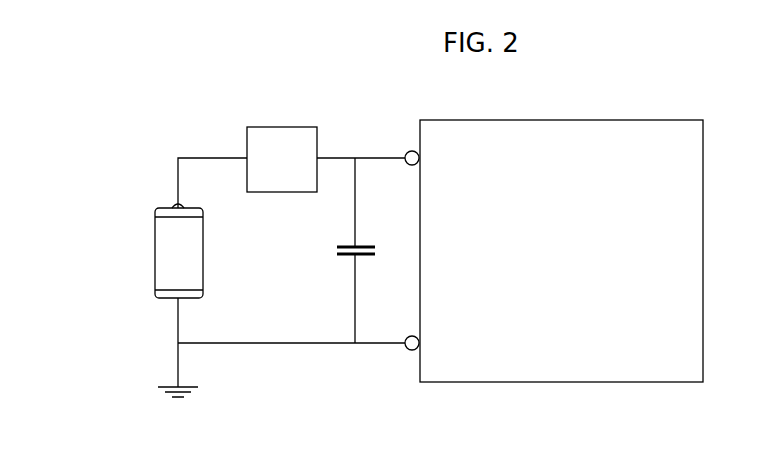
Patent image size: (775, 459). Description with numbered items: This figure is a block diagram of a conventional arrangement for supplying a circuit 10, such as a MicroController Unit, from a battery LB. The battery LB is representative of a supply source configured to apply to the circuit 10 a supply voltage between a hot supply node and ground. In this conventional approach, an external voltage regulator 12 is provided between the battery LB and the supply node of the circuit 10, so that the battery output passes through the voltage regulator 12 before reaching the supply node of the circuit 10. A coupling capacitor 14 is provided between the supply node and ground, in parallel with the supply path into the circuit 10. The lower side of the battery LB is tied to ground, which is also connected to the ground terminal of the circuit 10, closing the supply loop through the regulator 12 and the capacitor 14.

The circuit 10 is at (687, 315).
The voltage regulator 12 is at (284, 134).
The coupling capacitor 14 is at (352, 258).
The battery LB is at (150, 242).